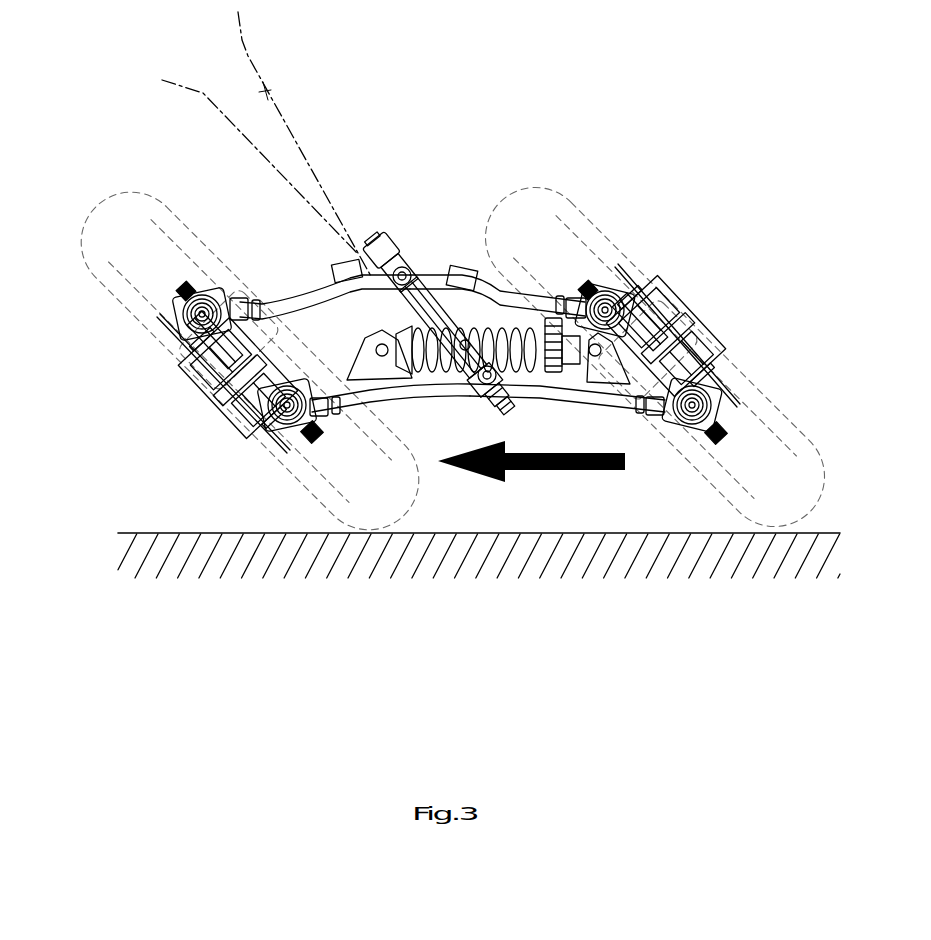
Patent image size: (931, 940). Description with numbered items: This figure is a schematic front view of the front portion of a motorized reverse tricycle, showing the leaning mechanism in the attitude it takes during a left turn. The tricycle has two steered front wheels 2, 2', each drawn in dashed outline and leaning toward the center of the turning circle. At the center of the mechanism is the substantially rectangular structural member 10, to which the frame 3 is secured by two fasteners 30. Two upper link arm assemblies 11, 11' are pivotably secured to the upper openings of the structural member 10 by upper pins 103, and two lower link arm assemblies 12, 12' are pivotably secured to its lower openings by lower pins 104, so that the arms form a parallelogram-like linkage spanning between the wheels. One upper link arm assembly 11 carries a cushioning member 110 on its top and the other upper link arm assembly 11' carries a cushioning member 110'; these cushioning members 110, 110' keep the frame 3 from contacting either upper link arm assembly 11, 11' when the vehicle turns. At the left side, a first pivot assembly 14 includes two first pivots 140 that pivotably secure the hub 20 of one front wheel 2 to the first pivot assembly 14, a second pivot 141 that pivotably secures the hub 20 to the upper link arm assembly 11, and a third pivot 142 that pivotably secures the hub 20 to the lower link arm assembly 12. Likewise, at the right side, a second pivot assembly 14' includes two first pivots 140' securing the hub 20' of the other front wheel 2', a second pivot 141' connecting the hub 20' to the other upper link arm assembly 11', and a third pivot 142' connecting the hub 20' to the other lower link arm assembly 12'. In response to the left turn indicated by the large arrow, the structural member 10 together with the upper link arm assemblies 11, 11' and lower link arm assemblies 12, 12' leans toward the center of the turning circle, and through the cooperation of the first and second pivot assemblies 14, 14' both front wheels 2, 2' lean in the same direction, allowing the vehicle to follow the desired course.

The front wheel 2 is at (249, 360).
The front wheel 2' is at (655, 357).
The frame 3 is at (264, 92).
The structural member 10 is at (399, 250).
The upper link arm assembly 11 is at (320, 312).
The upper link arm assembly 11' is at (524, 236).
The lower link arm assembly 12 is at (390, 406).
The lower link arm assembly 12' is at (567, 411).
The first pivot assembly 14 is at (164, 208).
The second pivot assembly 14' is at (612, 229).
The hub 20 is at (214, 383).
The hub 20' is at (689, 335).
The fastener 30 is at (392, 242).
The upper pin 103 is at (413, 258).
The lower pin 104 is at (488, 392).
The cushioning member 110 is at (322, 260).
The cushioning member 110' is at (502, 221).
The first pivot 140 is at (148, 311).
The first pivot 140' is at (636, 274).
The second pivot 141 is at (166, 353).
The second pivot 141' is at (668, 298).
The third pivot 142 is at (239, 443).
The third pivot 142' is at (737, 398).